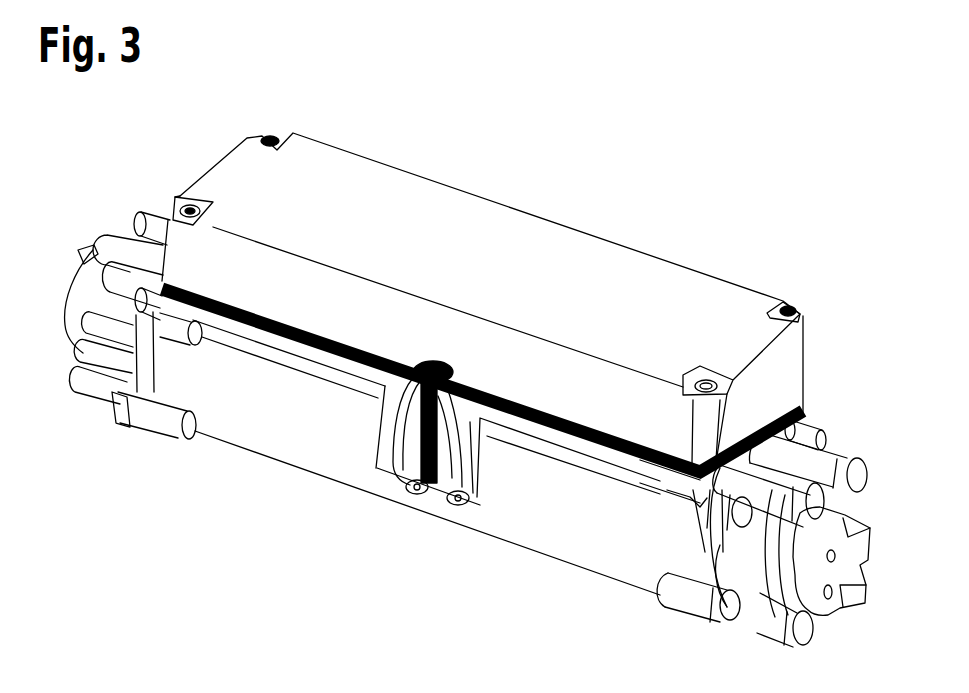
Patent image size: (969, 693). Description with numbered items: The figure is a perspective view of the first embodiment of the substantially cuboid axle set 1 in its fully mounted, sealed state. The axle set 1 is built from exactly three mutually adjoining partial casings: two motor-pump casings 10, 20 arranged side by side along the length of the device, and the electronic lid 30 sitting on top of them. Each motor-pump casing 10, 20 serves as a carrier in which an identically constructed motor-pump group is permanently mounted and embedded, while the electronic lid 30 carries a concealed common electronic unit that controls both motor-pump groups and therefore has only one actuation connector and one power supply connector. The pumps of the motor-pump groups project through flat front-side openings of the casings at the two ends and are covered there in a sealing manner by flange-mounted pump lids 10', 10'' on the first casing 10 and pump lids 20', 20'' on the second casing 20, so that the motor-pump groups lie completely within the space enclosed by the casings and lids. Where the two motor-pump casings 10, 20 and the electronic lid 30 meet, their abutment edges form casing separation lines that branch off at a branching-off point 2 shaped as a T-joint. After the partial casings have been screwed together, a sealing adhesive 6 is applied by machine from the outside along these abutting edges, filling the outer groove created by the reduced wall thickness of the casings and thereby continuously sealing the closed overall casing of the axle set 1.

The axle set 1 is at (185, 483).
The branching-off point 2 is at (392, 467).
The sealing adhesive 6 is at (453, 500).
The motor-pump casing 10 is at (362, 403).
The pump lid 10' is at (137, 414).
The pump lid 10'' is at (52, 385).
The motor-pump casing 20 is at (672, 532).
The pump lid 20' is at (729, 574).
The pump lid 20'' is at (868, 561).
The electronic lid 30 is at (697, 307).